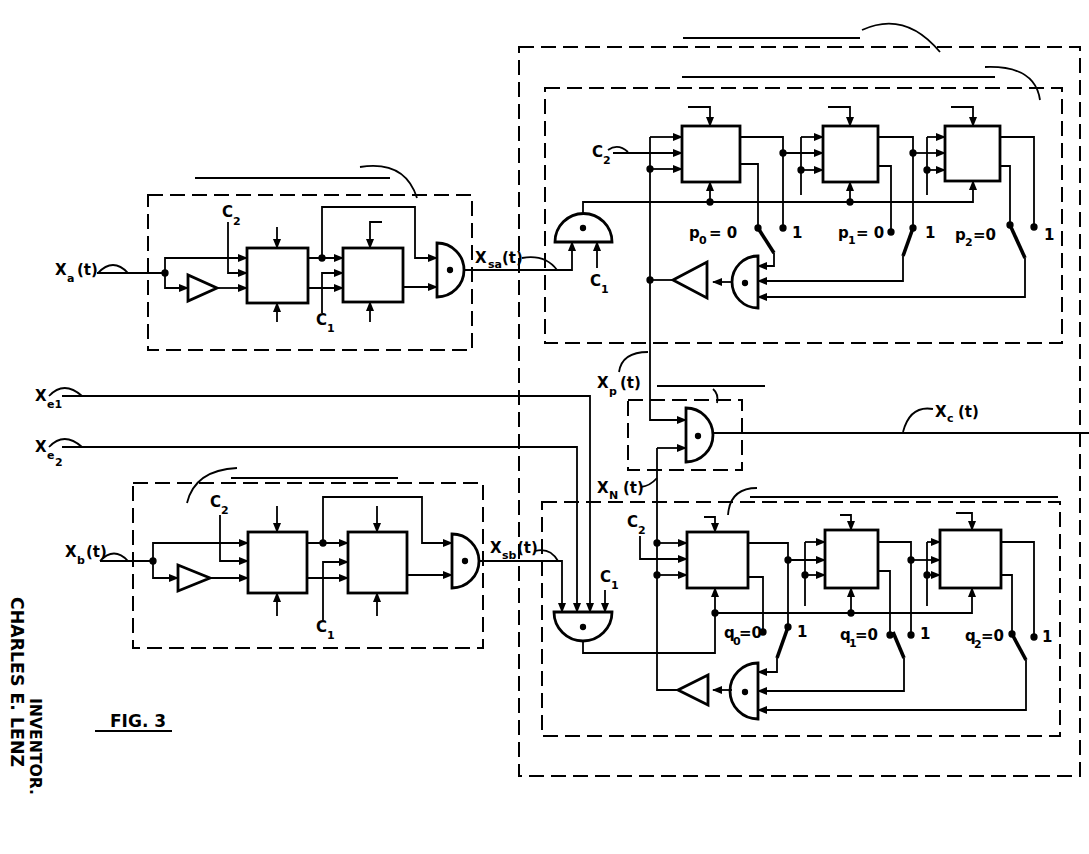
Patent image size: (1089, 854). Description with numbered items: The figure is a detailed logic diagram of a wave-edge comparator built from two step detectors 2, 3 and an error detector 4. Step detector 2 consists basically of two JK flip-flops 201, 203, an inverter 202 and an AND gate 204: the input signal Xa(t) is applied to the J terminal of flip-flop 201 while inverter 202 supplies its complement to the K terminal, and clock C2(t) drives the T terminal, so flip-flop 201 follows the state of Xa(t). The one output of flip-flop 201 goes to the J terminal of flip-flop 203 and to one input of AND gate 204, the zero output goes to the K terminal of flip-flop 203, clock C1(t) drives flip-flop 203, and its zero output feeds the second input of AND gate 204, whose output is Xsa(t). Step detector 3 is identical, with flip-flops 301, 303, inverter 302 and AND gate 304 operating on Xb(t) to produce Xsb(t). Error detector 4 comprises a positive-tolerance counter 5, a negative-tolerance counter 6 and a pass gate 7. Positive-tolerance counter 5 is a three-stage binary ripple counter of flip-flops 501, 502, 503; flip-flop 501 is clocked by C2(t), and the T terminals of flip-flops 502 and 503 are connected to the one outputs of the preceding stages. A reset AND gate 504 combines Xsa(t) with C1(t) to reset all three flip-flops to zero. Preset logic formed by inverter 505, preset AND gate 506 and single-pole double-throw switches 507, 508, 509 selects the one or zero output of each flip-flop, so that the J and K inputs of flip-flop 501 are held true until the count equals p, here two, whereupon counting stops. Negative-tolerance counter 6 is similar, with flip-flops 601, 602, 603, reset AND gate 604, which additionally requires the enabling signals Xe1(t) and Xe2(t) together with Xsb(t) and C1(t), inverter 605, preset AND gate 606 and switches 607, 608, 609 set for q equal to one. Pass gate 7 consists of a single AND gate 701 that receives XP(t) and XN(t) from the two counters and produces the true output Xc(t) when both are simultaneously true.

The step detector 2 is at (185, 212).
The step detector 3 is at (203, 632).
The error detector 4 is at (550, 75).
The positive-tolerance counter 5 is at (1005, 313).
The negative-tolerance counter 6 is at (1010, 715).
The pass gate 7 is at (728, 421).
The flip-flop 201 is at (283, 262).
The inverter 202 is at (199, 290).
The flip-flop 203 is at (352, 260).
The AND gate 204 is at (450, 284).
The flip-flop 301 is at (272, 545).
The inverter 302 is at (199, 583).
The flip-flop 303 is at (372, 545).
The AND gate 304 is at (461, 540).
The flip-flop 501 is at (720, 140).
The flip-flop 502 is at (857, 140).
The flip-flop 503 is at (977, 140).
The reset AND gate 504 is at (573, 223).
The inverter 505 is at (693, 278).
The preset AND gate 506 is at (752, 301).
The switch 507 is at (773, 241).
The switch 508 is at (903, 243).
The switch 509 is at (1012, 243).
The flip-flop 601 is at (730, 553).
The flip-flop 602 is at (852, 548).
The flip-flop 603 is at (975, 548).
The reset AND gate 604 is at (594, 628).
The inverter 605 is at (691, 696).
The preset AND gate 606 is at (757, 715).
The switch 607 is at (782, 644).
The switch 608 is at (895, 650).
The switch 609 is at (1013, 640).
The AND gate 701 is at (702, 446).